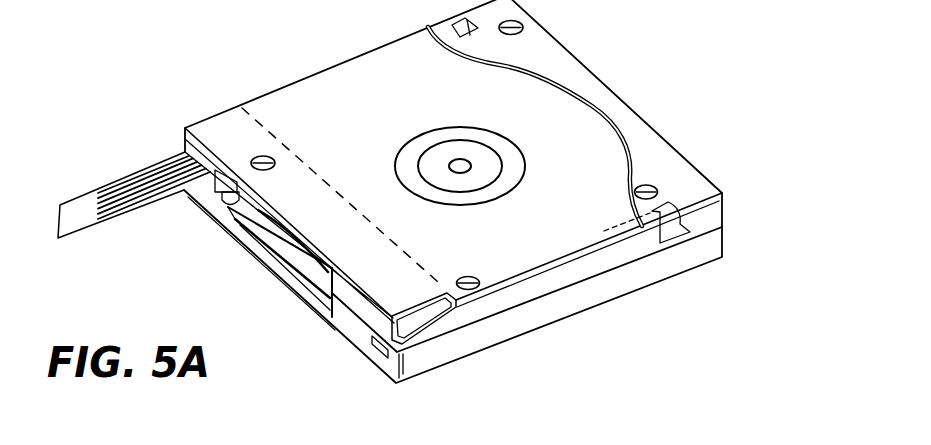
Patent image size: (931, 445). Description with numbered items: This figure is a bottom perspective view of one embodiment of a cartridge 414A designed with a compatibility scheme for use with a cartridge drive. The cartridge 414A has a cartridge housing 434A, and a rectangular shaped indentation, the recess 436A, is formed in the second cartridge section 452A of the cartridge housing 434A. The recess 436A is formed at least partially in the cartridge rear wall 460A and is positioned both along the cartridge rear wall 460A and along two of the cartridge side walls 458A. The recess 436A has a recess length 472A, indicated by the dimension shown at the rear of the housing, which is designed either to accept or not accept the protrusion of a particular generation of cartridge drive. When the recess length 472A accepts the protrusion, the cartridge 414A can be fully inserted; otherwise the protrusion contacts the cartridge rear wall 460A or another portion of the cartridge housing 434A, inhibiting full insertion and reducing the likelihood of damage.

The cartridge 414A is at (676, 294).
The cartridge housing 434A is at (390, 63).
The recess 436A is at (425, 330).
The second cartridge section 452A is at (585, 263).
The cartridge side walls 458A is at (599, 192).
The cartridge rear wall 460A is at (358, 336).
The recess length 472A is at (141, 84).